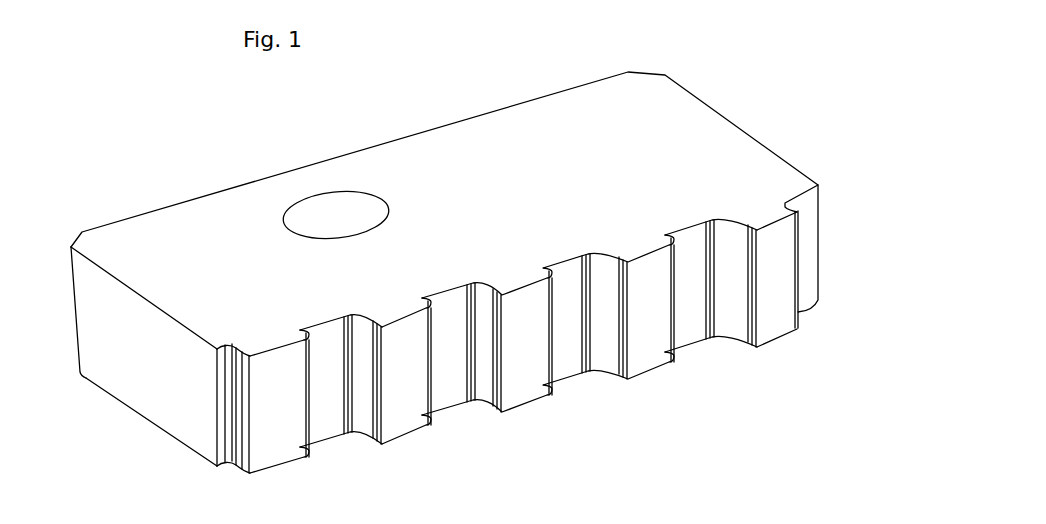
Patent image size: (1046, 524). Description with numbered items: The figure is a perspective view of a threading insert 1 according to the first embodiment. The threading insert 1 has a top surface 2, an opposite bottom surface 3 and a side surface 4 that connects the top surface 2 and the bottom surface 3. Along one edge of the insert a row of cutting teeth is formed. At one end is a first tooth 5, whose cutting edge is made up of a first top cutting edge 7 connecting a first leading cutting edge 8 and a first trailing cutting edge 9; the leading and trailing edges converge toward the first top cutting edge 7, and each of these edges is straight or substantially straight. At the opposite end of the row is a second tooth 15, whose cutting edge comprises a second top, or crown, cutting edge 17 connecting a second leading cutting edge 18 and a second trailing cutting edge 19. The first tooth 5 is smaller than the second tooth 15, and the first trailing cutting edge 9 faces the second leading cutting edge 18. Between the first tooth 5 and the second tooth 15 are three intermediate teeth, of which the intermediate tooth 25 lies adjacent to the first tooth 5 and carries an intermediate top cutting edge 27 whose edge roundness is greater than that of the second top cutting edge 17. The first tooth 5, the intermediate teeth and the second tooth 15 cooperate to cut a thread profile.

The threading insert 1 is at (170, 136).
The top surface 2 is at (702, 153).
The bottom surface 3 is at (202, 457).
The side surface 4 is at (150, 367).
The first tooth 5 is at (268, 428).
The first top cutting edge 7 is at (268, 350).
The first leading cutting edge 8 is at (237, 353).
The first trailing cutting edge 9 is at (303, 338).
The second tooth 15 is at (780, 288).
The second top cutting edge 17 is at (773, 223).
The second leading cutting edge 18 is at (728, 223).
The second trailing cutting edge 19 is at (792, 206).
The intermediate tooth 25 is at (403, 398).
The intermediate top cutting edge 27 is at (405, 318).